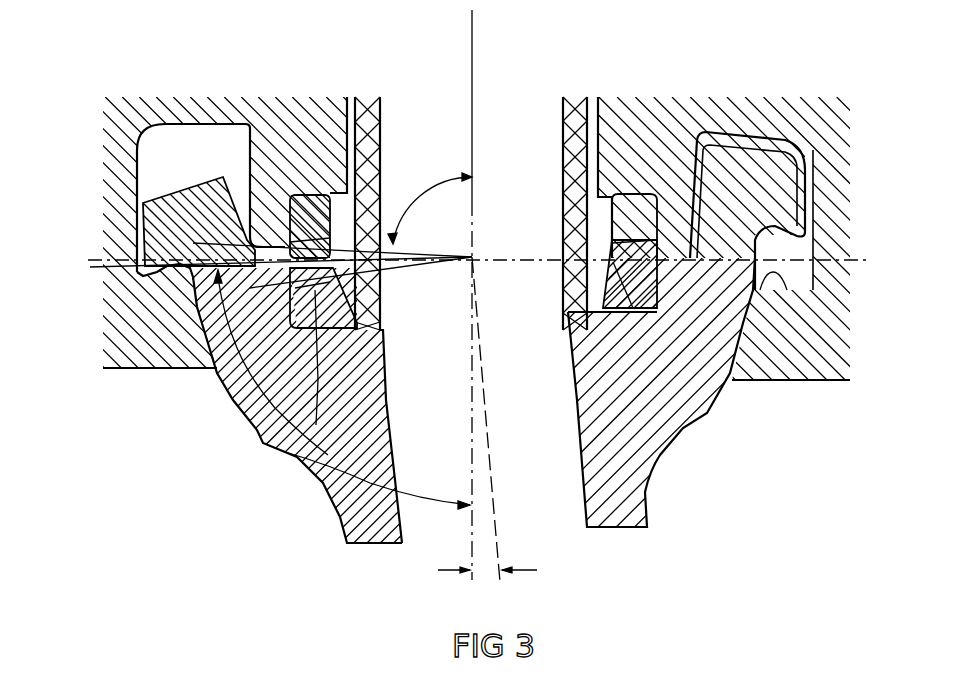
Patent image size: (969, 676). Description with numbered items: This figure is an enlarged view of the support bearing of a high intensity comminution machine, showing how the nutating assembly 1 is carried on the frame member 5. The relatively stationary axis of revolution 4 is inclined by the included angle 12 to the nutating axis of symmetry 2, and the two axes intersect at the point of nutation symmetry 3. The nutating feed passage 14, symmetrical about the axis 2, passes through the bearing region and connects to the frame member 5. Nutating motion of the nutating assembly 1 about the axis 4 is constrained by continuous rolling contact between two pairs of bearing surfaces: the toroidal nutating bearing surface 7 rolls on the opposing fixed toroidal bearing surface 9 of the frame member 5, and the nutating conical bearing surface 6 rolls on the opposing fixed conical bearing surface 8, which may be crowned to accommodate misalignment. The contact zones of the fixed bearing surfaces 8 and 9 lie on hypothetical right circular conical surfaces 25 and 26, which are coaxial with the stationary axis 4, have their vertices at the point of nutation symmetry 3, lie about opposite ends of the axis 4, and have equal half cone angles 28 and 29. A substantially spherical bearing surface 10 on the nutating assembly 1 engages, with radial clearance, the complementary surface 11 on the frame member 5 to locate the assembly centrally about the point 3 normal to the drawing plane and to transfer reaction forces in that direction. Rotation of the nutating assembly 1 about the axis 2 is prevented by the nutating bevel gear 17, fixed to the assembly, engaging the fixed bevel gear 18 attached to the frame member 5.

The nutating assembly 1 is at (663, 453).
The nutating axis of symmetry 2 is at (495, 522).
The point of nutation symmetry 3 is at (472, 257).
The axis of revolution 4 is at (470, 75).
The frame member 5 is at (158, 372).
The nutating conical bearing surface 6 is at (233, 400).
The toroidal nutating bearing surface 7 is at (772, 217).
The fixed conical bearing surface 8 is at (280, 127).
The fixed toroidal bearing surface 9 is at (775, 290).
The bearing surface 10 is at (757, 262).
The complementary surface 11 is at (213, 333).
The included angle 12 is at (483, 572).
The feed passage 14 is at (325, 485).
The nutating bevel gear 17 is at (577, 418).
The fixed bevel gear 18 is at (332, 127).
The hypothetical right circular conical surface 25 is at (212, 258).
The hypothetical right circular conical surface 26 is at (92, 266).
The half cone angle 28 is at (429, 206).
The half cone angle 29 is at (377, 480).